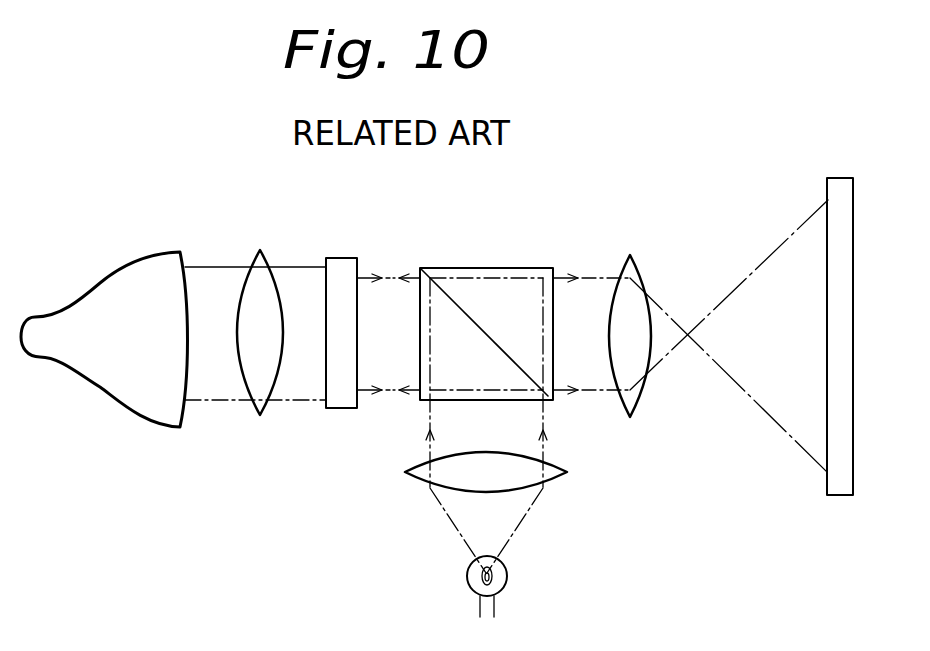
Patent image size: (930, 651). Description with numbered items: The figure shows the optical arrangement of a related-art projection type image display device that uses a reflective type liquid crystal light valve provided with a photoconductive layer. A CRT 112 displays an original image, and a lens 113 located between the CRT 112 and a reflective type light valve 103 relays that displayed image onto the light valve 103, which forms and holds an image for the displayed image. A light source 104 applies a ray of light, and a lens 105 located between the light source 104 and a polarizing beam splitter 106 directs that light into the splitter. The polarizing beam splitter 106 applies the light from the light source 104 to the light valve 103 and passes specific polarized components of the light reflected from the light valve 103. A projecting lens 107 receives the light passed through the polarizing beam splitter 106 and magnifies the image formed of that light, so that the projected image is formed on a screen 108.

The reflective type light valve 103 is at (340, 258).
The light source 104 is at (507, 578).
The lens 105 is at (561, 466).
The polarizing beam splitter 106 is at (483, 267).
The projecting lens 107 is at (632, 255).
The screen 108 is at (838, 178).
The CRT 112 is at (97, 295).
The lens 113 is at (258, 252).